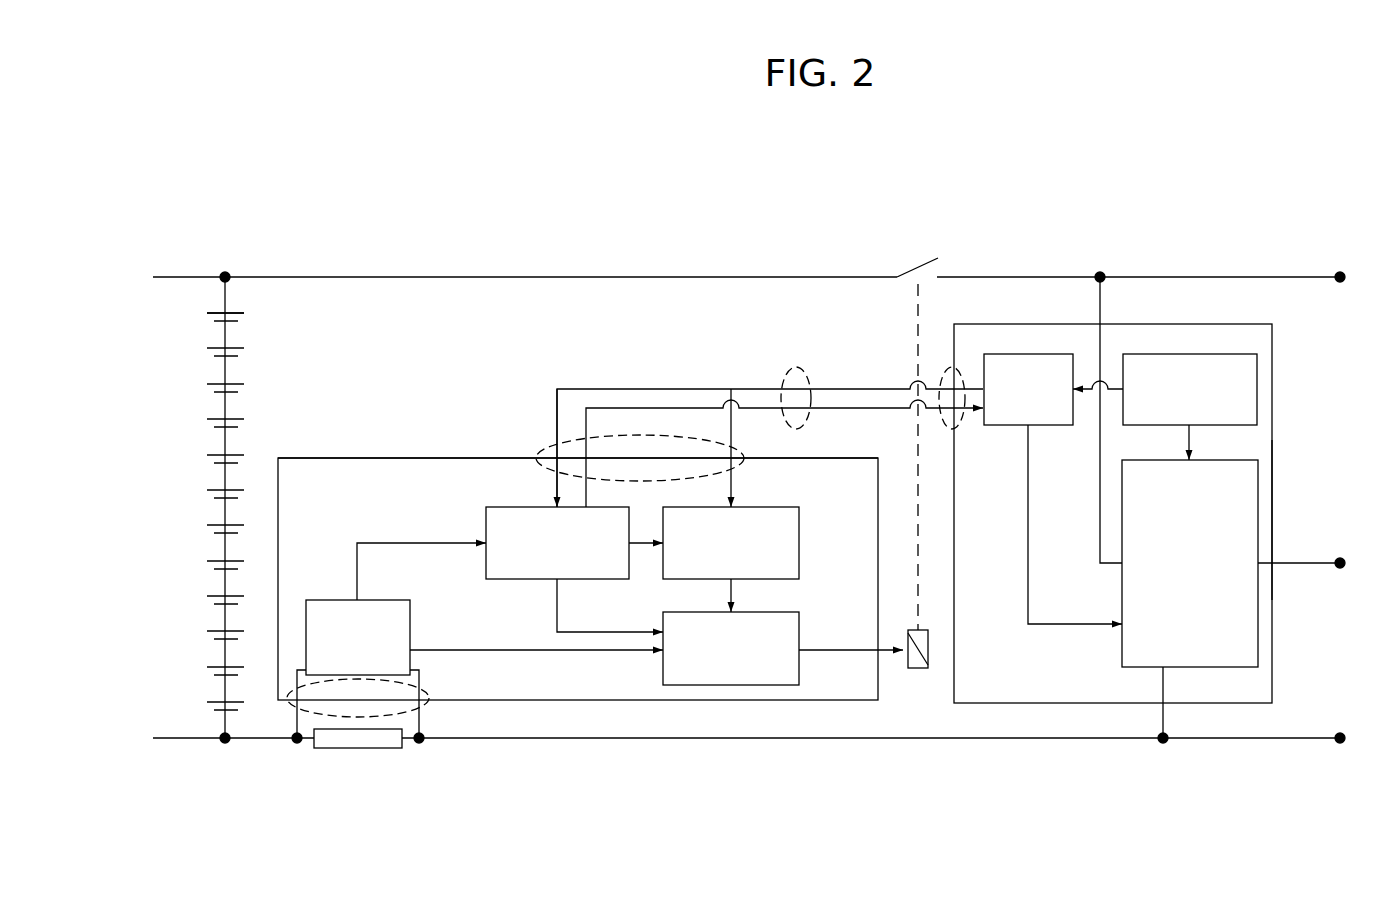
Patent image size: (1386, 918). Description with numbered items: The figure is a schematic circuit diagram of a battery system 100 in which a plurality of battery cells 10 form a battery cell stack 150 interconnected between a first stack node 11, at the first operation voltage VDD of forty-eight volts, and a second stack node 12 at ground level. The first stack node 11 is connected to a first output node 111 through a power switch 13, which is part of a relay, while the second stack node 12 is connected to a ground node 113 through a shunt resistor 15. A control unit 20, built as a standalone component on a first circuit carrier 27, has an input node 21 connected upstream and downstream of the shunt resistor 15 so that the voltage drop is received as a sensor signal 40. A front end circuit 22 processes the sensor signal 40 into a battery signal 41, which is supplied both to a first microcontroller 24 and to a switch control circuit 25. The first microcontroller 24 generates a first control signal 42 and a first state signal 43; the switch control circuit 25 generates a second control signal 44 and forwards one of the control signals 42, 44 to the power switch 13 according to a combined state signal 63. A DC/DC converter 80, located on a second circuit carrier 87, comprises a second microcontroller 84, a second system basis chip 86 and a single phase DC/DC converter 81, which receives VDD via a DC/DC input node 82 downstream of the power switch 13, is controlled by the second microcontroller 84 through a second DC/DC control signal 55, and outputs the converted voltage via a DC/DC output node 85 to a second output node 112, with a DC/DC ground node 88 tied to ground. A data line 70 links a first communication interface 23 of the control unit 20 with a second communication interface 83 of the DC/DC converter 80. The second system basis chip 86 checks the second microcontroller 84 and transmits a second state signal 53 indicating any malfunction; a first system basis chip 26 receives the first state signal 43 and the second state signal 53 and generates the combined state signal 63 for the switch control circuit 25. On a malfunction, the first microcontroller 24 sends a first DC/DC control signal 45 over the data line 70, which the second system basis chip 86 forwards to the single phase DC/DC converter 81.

The battery system 100 is at (800, 245).
The battery cell 10 is at (210, 418).
The battery cell stack 150 is at (190, 543).
The first stack node 11 is at (228, 272).
The second stack node 12 is at (225, 745).
The power switch 13 is at (932, 258).
The shunt resistor 15 is at (355, 750).
The control unit 20 is at (352, 458).
The input node 21 is at (420, 688).
The front end circuit 22 is at (331, 598).
The first communication interface 23 is at (548, 447).
The first microcontroller 24 is at (486, 563).
The switch control circuit 25 is at (799, 668).
The first system basis chip 26 is at (799, 520).
The first circuit carrier 27 is at (420, 458).
The sensor signal 40 is at (295, 745).
The battery signal 41 is at (510, 581).
The first control signal 42 is at (610, 605).
The first state signal 43 is at (645, 541).
The second control signal 44 is at (851, 635).
The first DC/DC control signal 45 is at (854, 512).
The second state signal 53 is at (770, 435).
The second DC/DC control signal 55 is at (1209, 442).
The combined state signal 63 is at (740, 590).
The data line 70 is at (803, 371).
The DC/DC converter 80 is at (1272, 405).
The single phase DC/DC converter 81 is at (1258, 645).
The DC/DC input node 82 is at (1103, 270).
The second communication interface 83 is at (950, 372).
The second microcontroller 84 is at (1257, 365).
The DC/DC output node 85 is at (1272, 535).
The second system basis chip 86 is at (1052, 425).
The second circuit carrier 87 is at (1272, 478).
The DC/DC ground node 88 is at (1160, 745).
The first output node 111 is at (1340, 271).
The second output node 112 is at (1340, 570).
The ground node 113 is at (1340, 745).